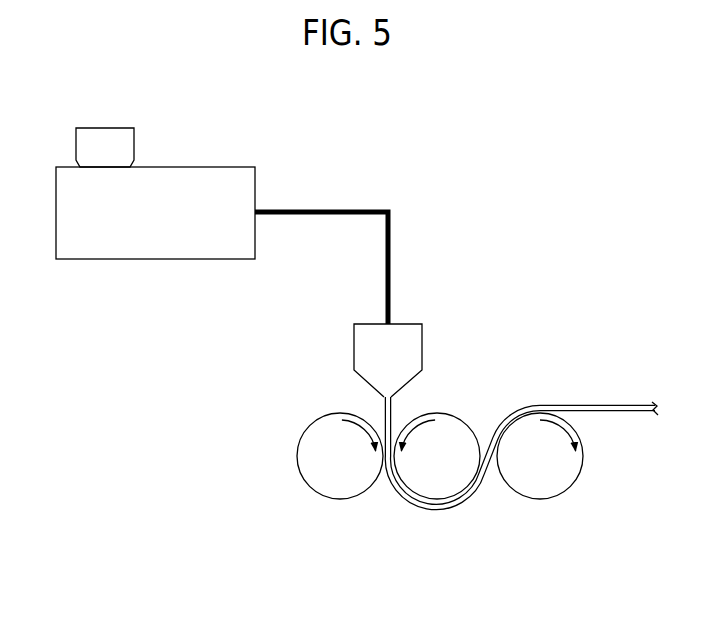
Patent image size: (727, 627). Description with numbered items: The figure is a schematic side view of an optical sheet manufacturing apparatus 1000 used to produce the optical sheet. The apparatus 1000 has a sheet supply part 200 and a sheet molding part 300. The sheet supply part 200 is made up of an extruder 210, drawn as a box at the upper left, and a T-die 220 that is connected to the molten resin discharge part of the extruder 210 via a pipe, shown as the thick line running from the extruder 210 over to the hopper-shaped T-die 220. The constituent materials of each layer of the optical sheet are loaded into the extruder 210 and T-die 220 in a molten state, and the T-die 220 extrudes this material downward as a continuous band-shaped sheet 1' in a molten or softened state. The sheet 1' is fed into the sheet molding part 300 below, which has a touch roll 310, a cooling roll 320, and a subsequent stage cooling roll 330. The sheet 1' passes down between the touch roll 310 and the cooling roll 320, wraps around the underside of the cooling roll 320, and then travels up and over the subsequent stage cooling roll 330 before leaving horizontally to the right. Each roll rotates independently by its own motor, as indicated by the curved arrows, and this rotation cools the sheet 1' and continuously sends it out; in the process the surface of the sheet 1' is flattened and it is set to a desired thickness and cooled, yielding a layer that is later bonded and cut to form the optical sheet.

The optical sheet manufacturing apparatus 1000 is at (470, 148).
The sheet supply part 200 is at (340, 163).
The extruder 210 is at (201, 165).
The T-die 220 is at (354, 345).
The sheet molding part 300 is at (555, 338).
The touch roll 310 is at (298, 440).
The cooling roll 320 is at (445, 413).
The subsequent stage cooling roll 330 is at (540, 502).
The sheet 1' is at (523, 452).